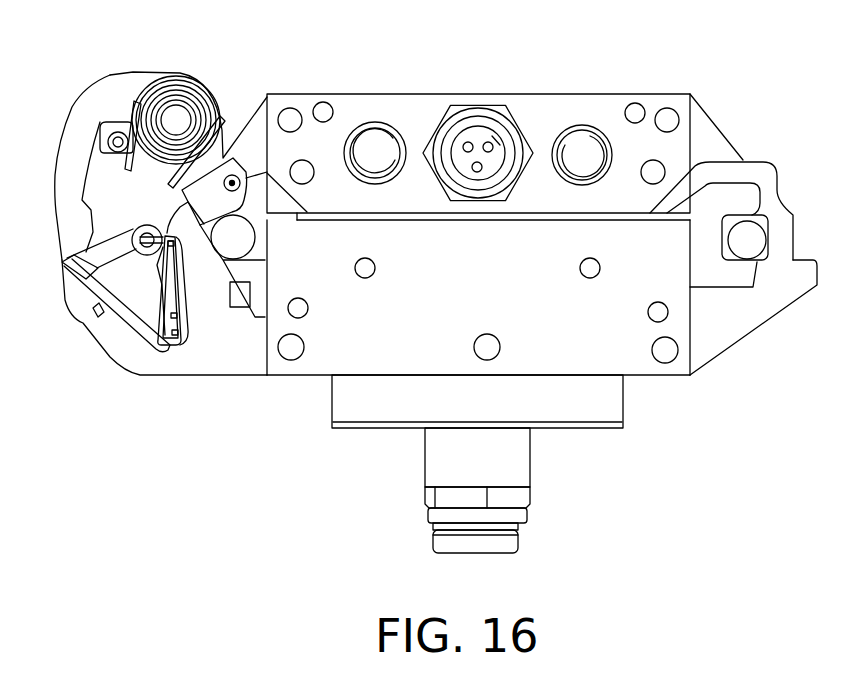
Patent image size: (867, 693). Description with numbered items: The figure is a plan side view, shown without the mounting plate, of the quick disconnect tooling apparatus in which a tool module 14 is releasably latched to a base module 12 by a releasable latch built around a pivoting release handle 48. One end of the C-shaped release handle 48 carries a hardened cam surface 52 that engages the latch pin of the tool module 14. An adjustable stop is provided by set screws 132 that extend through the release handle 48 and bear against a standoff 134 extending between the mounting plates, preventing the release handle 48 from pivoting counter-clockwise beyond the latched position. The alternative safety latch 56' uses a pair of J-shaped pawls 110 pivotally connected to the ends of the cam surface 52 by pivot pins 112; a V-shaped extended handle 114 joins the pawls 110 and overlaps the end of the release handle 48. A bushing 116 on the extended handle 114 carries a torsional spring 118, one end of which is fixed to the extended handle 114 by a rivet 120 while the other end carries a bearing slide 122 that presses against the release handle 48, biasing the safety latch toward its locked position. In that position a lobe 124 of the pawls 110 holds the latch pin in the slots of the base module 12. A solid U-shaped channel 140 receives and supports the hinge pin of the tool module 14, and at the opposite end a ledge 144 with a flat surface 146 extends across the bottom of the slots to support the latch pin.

The base module 12 is at (97, 347).
The tool module 14 is at (718, 128).
The release handle 48 is at (95, 85).
The cam surface 52 is at (245, 192).
The direction arrow 56' is at (188, 400).
The J-shaped pawls 110 is at (187, 345).
The pivot pins 112 is at (233, 158).
The extended handle 114 is at (70, 278).
The bushing 116 is at (147, 224).
The torsional spring 118 is at (125, 252).
The rivet 120 is at (165, 262).
The bearing slide 122 is at (67, 256).
The lobe 124 is at (263, 214).
The set screws 132 is at (121, 122).
The standoff 134 is at (100, 122).
The U-shaped channel 140 is at (753, 287).
The ledge 144 is at (249, 309).
The flat surface 146 is at (267, 250).